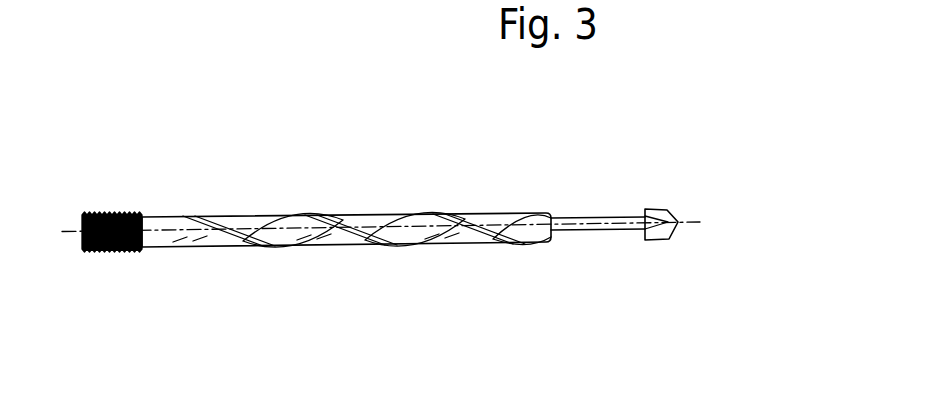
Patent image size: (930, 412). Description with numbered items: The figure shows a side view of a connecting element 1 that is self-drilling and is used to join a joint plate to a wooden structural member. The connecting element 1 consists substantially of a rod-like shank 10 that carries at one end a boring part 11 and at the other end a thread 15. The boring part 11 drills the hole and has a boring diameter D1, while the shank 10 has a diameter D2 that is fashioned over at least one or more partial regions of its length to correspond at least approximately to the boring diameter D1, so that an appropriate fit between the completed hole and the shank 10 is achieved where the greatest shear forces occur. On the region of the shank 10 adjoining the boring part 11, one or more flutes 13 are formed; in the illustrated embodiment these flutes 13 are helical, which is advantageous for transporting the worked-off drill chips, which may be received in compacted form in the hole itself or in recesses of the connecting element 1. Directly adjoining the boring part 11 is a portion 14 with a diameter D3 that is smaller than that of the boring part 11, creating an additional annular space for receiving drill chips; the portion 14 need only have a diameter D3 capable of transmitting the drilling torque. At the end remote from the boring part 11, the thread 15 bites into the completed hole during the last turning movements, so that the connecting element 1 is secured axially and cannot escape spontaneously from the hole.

The connecting element 1 is at (548, 147).
The shank 10 is at (362, 216).
The boring part 11 is at (657, 241).
The flutes 13 is at (485, 243).
The portion 14 is at (595, 232).
The thread 15 is at (113, 214).
The boring diameter D1 is at (765, 240).
The diameter of shank D2 is at (243, 275).
The diameter of portion D3 is at (623, 260).